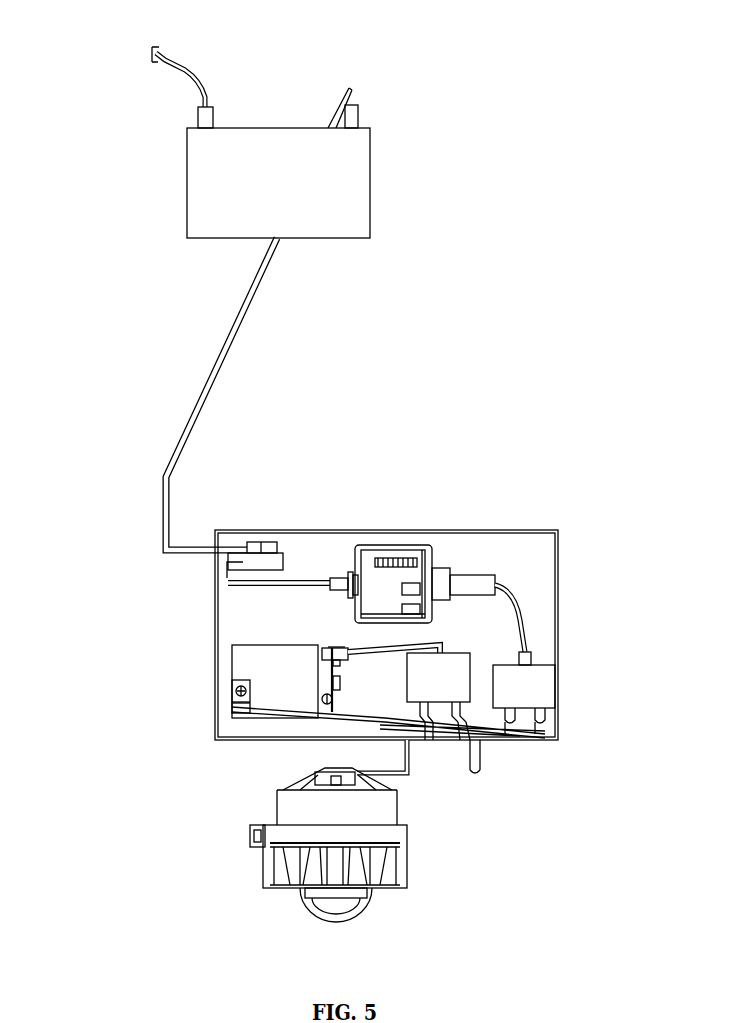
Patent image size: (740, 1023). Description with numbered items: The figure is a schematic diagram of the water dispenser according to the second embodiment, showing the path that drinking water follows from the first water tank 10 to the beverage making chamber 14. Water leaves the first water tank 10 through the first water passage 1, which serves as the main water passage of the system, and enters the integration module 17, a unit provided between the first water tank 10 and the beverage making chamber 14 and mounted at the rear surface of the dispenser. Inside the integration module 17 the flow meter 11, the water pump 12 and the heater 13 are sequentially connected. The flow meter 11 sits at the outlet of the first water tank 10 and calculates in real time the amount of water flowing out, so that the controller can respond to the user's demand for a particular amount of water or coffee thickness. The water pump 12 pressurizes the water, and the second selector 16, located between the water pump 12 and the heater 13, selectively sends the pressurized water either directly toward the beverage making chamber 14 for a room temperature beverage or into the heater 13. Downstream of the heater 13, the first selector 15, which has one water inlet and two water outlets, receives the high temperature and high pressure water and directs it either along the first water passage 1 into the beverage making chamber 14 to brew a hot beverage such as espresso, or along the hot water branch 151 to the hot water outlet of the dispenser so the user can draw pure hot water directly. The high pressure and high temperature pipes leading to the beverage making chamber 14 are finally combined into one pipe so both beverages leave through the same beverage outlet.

The first water passage 1 is at (152, 60).
The first water tank 10 is at (205, 185).
The flow meter 11 is at (262, 555).
The water pump 12 is at (395, 560).
The heater 13 is at (235, 684).
The beverage making chamber 14 is at (305, 818).
The first selector 15 is at (460, 682).
The hot water branch 151 is at (473, 763).
The second selector 16 is at (540, 682).
The integration module 17 is at (215, 632).